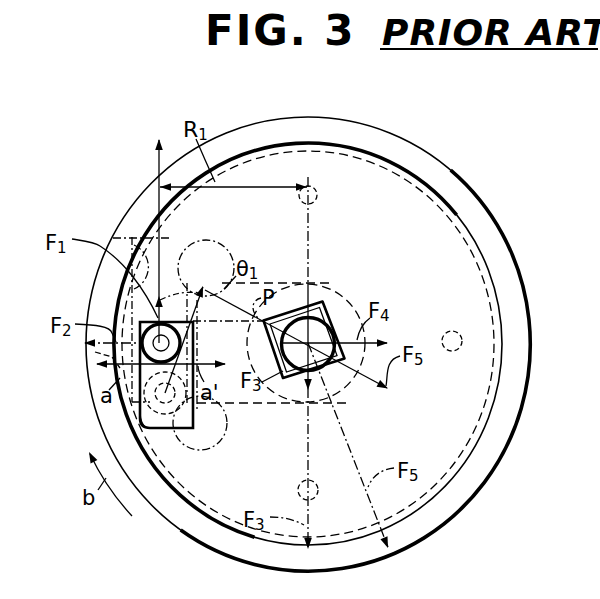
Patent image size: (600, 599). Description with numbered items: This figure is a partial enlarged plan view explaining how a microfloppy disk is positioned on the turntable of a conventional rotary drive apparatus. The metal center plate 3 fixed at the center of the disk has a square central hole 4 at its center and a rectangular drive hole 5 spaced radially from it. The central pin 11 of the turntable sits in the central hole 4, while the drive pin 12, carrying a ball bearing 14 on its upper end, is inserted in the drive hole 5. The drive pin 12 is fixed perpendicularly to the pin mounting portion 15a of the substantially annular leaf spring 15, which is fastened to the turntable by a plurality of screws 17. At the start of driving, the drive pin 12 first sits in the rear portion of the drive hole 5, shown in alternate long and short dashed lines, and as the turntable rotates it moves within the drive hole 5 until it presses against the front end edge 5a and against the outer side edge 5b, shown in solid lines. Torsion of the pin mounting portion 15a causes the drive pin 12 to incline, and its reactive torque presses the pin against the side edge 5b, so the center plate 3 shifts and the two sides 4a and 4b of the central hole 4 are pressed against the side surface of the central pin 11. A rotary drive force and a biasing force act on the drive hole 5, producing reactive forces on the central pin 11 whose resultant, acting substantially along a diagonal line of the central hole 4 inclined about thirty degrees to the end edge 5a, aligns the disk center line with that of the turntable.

The center plate 3 is at (474, 207).
The central hole 4 is at (309, 284).
The side of the central hole 4a is at (326, 306).
The side of the central hole 4b is at (295, 383).
The drive hole 5 is at (160, 432).
The front end edge 5a is at (182, 300).
The outer side edge 5b is at (132, 408).
The central pin 11 is at (333, 372).
The drive pin 12 is at (150, 343).
The ball bearing 14 is at (137, 312).
The leaf spring 15 is at (193, 505).
The pin mounting portion 15a is at (96, 355).
The screws 17 is at (318, 192).